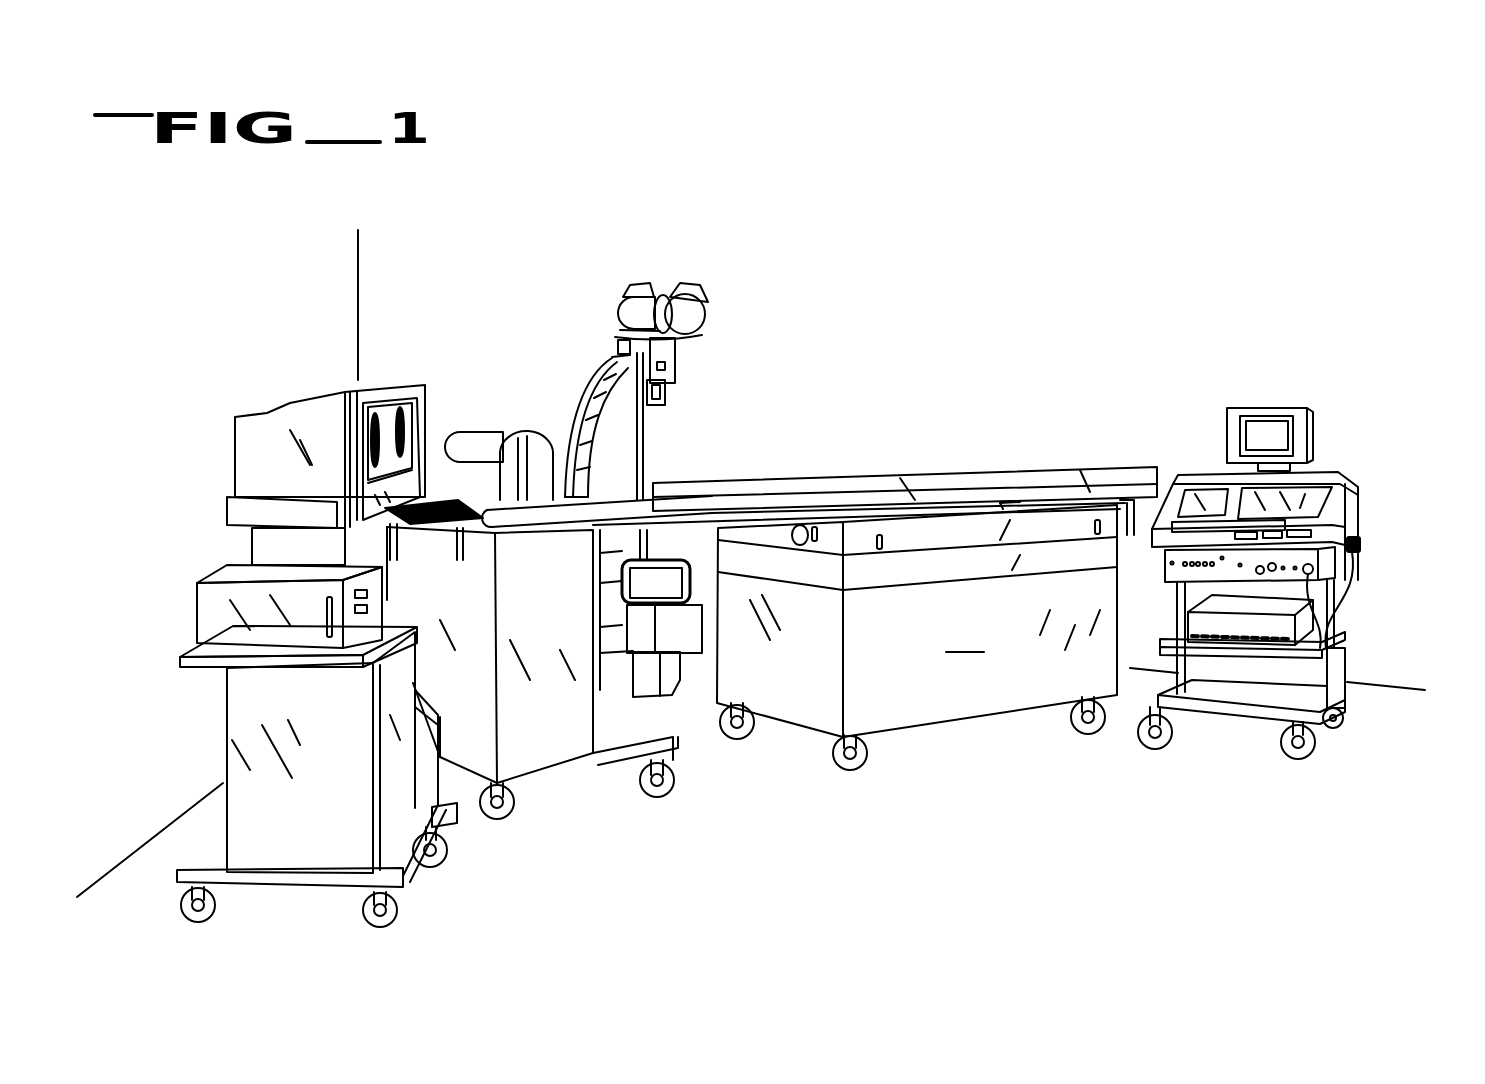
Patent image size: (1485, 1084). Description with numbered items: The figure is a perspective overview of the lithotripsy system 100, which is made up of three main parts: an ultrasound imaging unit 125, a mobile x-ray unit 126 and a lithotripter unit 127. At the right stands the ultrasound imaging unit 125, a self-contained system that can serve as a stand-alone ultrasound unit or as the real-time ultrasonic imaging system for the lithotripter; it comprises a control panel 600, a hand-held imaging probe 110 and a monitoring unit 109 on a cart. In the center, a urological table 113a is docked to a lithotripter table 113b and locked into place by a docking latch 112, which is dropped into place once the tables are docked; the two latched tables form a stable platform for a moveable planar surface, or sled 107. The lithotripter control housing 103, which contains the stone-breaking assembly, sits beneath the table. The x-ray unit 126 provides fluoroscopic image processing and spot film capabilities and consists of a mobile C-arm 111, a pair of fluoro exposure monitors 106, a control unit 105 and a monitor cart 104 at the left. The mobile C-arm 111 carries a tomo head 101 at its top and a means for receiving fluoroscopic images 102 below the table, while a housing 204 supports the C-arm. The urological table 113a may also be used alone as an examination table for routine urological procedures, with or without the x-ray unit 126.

The lithotripsy system 100 is at (800, 893).
The tomo head 101 is at (717, 322).
The means for receiving fluoroscopic images 102 is at (680, 635).
The lithotripter control housing 103 is at (950, 687).
The monitor cart 104 is at (330, 827).
The control unit 105 is at (227, 613).
The fluoro exposure monitors 106 is at (267, 467).
The sled 107 is at (758, 483).
The monitoring unit 109 is at (1270, 430).
The hand-held imaging probe 110 is at (1357, 553).
The mobile C-arm 111 is at (585, 395).
The docking latch 112 is at (792, 507).
The urological table 113a is at (580, 533).
The lithotripter table 113b is at (1007, 500).
The ultrasound imaging unit 125 is at (1368, 370).
The mobile x-ray unit 126 is at (732, 283).
The lithotripter unit 127 is at (966, 640).
The generator housing 204 is at (555, 740).
The control panel 600 is at (1322, 505).